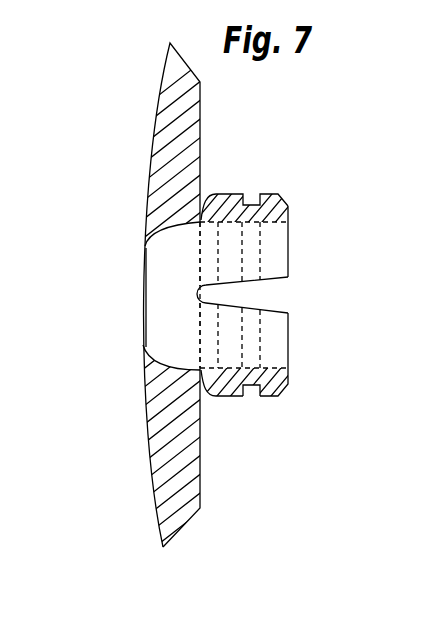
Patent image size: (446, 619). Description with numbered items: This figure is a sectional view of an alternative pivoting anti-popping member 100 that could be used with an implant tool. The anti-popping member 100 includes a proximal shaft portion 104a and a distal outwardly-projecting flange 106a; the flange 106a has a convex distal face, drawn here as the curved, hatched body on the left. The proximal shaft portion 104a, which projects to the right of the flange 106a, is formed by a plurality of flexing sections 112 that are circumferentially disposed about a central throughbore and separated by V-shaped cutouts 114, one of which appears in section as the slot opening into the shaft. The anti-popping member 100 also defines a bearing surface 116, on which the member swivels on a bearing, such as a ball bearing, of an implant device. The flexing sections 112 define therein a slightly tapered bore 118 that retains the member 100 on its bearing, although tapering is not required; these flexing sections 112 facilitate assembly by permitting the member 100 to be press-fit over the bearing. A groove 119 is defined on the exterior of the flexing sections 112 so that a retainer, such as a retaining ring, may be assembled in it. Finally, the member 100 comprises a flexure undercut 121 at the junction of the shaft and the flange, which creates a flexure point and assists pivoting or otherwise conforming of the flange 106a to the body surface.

The pivoting anti-popping member 100 is at (125, 465).
The proximal shaft portion 104a is at (268, 195).
The distal outwardly-projecting flange 106a is at (154, 122).
The flexing sections 112 is at (291, 222).
The V-shaped cutouts 114 is at (271, 277).
The bearing surface 116 is at (171, 363).
The tapered bore 118 is at (273, 366).
The groove 119 is at (250, 387).
The flexure undercut 121 is at (206, 219).